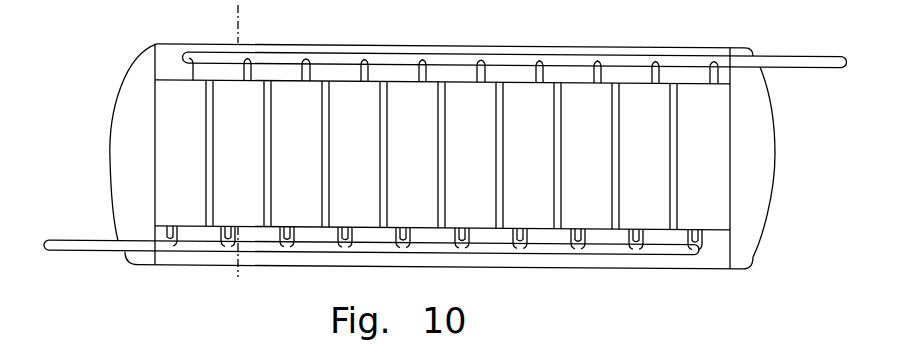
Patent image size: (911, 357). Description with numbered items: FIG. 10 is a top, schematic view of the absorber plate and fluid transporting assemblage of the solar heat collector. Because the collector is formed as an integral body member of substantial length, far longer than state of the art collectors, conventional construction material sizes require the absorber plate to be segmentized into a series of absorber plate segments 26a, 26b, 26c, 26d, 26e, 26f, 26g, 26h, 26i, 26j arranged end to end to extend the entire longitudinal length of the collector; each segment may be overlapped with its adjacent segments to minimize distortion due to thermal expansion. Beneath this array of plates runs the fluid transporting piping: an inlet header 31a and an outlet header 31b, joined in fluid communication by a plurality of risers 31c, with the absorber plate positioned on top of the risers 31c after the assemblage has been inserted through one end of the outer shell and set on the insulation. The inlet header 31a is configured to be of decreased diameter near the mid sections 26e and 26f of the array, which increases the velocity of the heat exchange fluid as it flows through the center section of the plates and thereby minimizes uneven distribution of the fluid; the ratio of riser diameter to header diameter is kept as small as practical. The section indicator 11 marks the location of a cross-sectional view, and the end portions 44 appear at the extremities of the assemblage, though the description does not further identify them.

The section line 11- 11 is at (238, 5).
The absorber plate segment 26a is at (185, 216).
The absorber plate segment 26b is at (246, 218).
The absorber plate segment 26c is at (303, 218).
The absorber plate segment 26d is at (362, 216).
The absorber plate segment 26e is at (397, 216).
The absorber plate segment 26f is at (473, 218).
The absorber plate segment 26g is at (513, 218).
The absorber plate segment 26h is at (587, 218).
The absorber plate segment 26i is at (632, 219).
The absorber plate segment 26j is at (703, 219).
The inlet header 31a is at (93, 252).
The outlet header 31b is at (796, 57).
The risers 31c is at (472, 70).
The end cap 44 is at (124, 126).